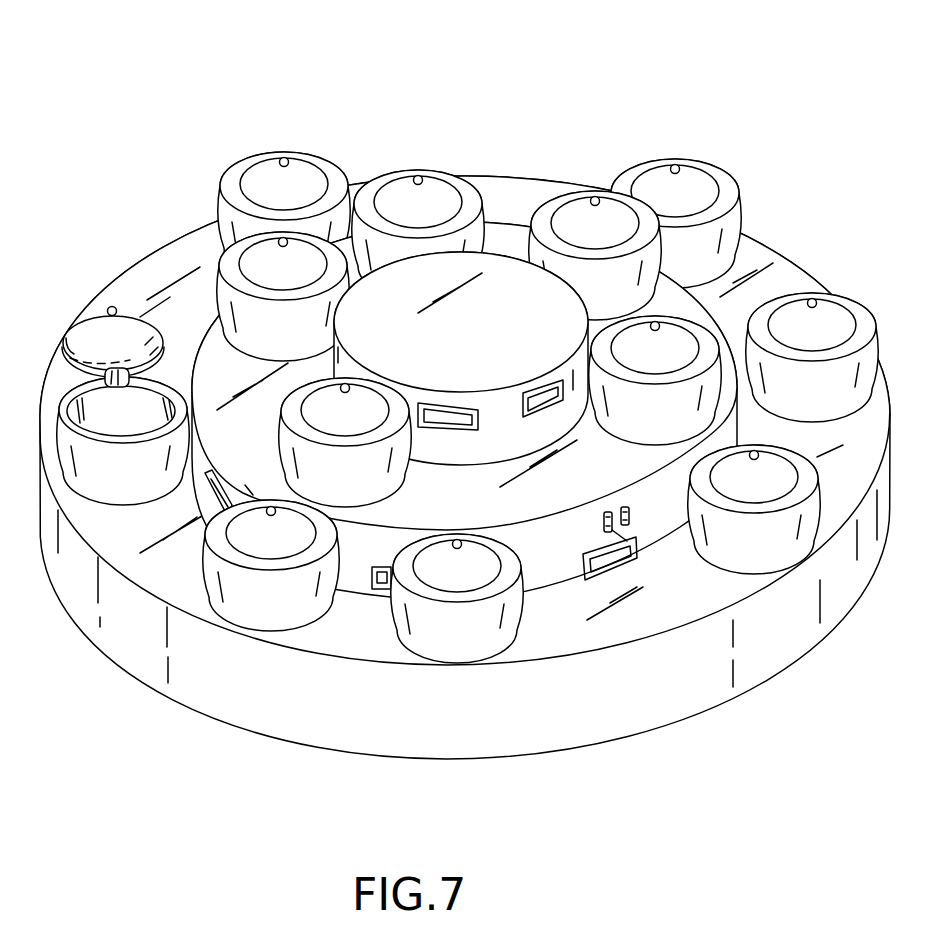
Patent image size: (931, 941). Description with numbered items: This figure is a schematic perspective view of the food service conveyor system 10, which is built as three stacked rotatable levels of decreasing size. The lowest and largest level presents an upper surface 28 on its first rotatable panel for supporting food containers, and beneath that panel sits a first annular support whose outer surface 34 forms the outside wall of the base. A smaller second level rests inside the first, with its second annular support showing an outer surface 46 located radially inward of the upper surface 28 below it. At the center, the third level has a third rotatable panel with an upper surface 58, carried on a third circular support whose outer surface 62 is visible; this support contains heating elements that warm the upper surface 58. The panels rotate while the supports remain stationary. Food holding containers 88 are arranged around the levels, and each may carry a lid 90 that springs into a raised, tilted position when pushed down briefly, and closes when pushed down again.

The food service conveyor system 10 is at (450, 415).
The upper surface 28 is at (370, 652).
The outer surface 34 is at (622, 713).
The outer surface 46 is at (573, 573).
The upper surface 58 is at (461, 286).
The outer surface 62 is at (521, 451).
The food holding containers 88 is at (97, 483).
The lids 90 is at (101, 351).